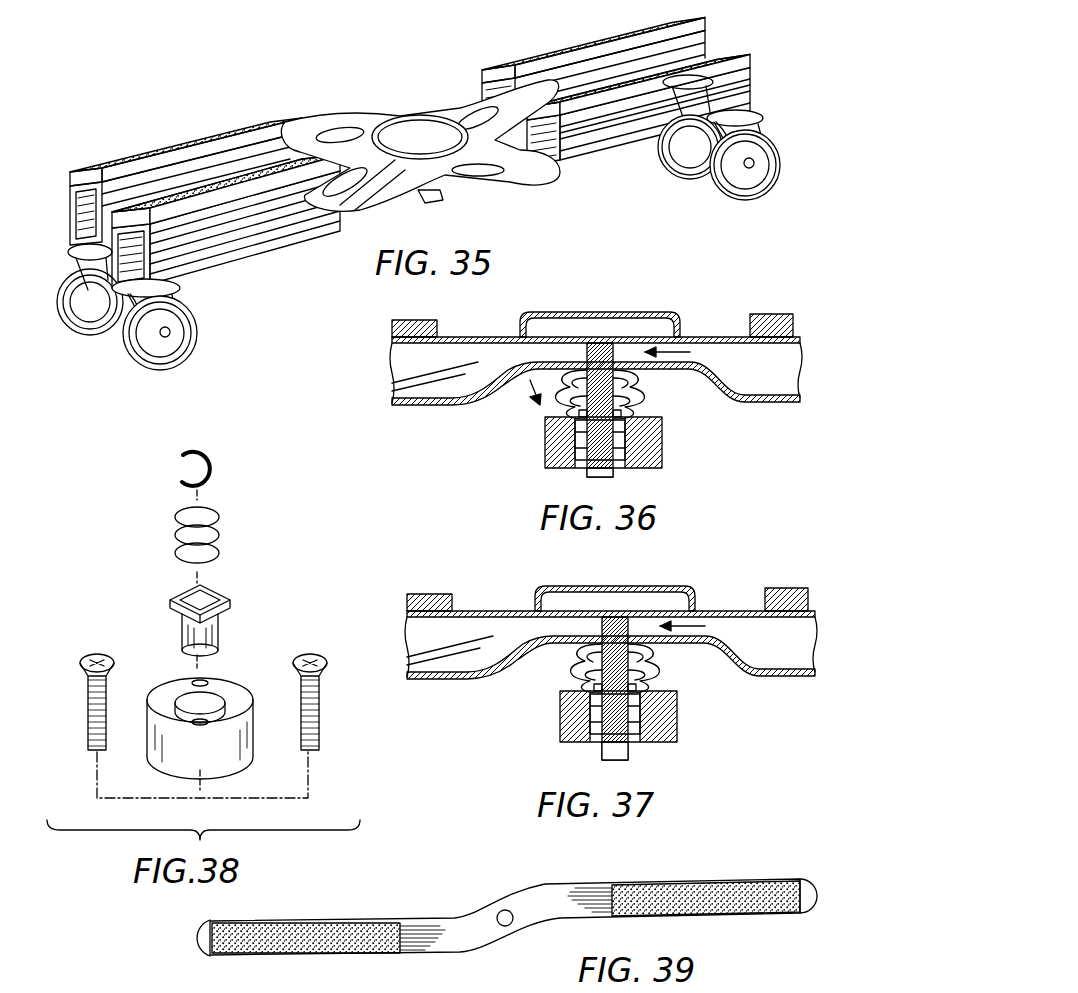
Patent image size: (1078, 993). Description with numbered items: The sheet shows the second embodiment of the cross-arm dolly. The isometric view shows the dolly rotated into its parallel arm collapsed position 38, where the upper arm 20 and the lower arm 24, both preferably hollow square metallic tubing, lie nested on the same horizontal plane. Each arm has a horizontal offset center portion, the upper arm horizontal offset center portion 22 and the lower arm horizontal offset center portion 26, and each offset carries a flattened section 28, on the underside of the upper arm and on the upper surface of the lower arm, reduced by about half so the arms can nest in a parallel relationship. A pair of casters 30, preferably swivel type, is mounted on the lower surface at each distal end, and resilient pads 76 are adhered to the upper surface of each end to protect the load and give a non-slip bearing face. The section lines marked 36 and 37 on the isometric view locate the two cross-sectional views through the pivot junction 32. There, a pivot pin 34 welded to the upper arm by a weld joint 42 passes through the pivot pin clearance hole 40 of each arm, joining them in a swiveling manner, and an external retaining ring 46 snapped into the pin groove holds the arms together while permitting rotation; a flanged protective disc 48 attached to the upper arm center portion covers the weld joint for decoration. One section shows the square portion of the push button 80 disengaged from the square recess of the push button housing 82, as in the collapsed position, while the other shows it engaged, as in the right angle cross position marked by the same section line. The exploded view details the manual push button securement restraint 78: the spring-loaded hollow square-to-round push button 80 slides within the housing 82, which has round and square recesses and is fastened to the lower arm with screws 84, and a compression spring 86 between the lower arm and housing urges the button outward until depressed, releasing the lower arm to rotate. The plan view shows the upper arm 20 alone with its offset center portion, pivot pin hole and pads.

In FIG. 35, the upper arm 20 is at (720, 46).
In FIG. 36, the upper arm 20 is at (420, 408).
In FIG. 37, the upper arm 20 is at (611, 675).
In FIG. 39, the upper arm 20 is at (415, 920).
In FIG. 35, the upper arm horizontal offset center portion 22 is at (440, 90).
In FIG. 36, the upper arm horizontal offset center portion 22 is at (530, 370).
In FIG. 37, the upper arm horizontal offset center portion 22 is at (514, 685).
In FIG. 39, the upper arm horizontal offset center portion 22 is at (500, 905).
In FIG. 35, the lower arm 24 is at (62, 240).
In FIG. 35, the lower arm horizontal offset center portion 26 is at (355, 125).
In FIG. 36, the flattened section 28 is at (683, 378).
In FIG. 37, the flattened section 28 is at (706, 671).
In FIG. 35, the caster 30 is at (155, 372).
In FIG. 39, the caster 30 is at (790, 915).
In FIG. 36, the pivot junction 32 is at (705, 338).
In FIG. 37, the pivot junction 32 is at (684, 579).
In FIG. 36, the pivot pin 34 is at (522, 322).
In FIG. 37, the pivot pin 34 is at (510, 578).
In FIG. 39, the pivot pin 34 is at (505, 926).
In FIG. 35, the right angle cross position 36 is at (350, 49).
In FIG. 35, the section line FIG. 37 is at (563, 75).
In FIG. 35, the parallel arm collapsed position 38 is at (416, 223).
In FIG. 36, the pivot pin clearance hole 40 is at (575, 455).
In FIG. 37, the pivot pin clearance hole 40 is at (525, 742).
In FIG. 36, the weld joint 42 is at (588, 337).
In FIG. 37, the weld joint 42 is at (623, 653).
In FIG. 39, the weld joint 42 is at (575, 858).
In FIG. 36, the external retaining ring 46 is at (640, 415).
In FIG. 37, the external retaining ring 46 is at (676, 714).
In FIG. 38, the external retaining ring 46 is at (210, 460).
In FIG. 35, the flanged protective disc 48 is at (400, 180).
In FIG. 36, the flanged protective disc 48 is at (640, 312).
In FIG. 37, the flanged protective disc 48 is at (615, 578).
In FIG. 35, the resilient pad 76 is at (72, 172).
In FIG. 36, the resilient pad 76 is at (400, 334).
In FIG. 37, the resilient pad 76 is at (595, 569).
In FIG. 39, the resilient pad 76 is at (730, 882).
In FIG. 36, the manual push button securement restraint 78 is at (470, 388).
In FIG. 37, the manual push button securement restraint 78 is at (577, 602).
In FIG. 36, the push button 80 is at (587, 475).
In FIG. 37, the push button 80 is at (556, 758).
In FIG. 38, the push button 80 is at (225, 600).
In FIG. 35, the push button housing 82 is at (445, 196).
In FIG. 36, the push button housing 82 is at (650, 468).
In FIG. 37, the push button housing 82 is at (638, 743).
In FIG. 38, the push button housing 82 is at (280, 750).
In FIG. 38, the screws 84 is at (97, 650).
In FIG. 36, the compression spring 86 is at (600, 394).
In FIG. 37, the compression spring 86 is at (615, 668).
In FIG. 38, the compression spring 86 is at (175, 530).